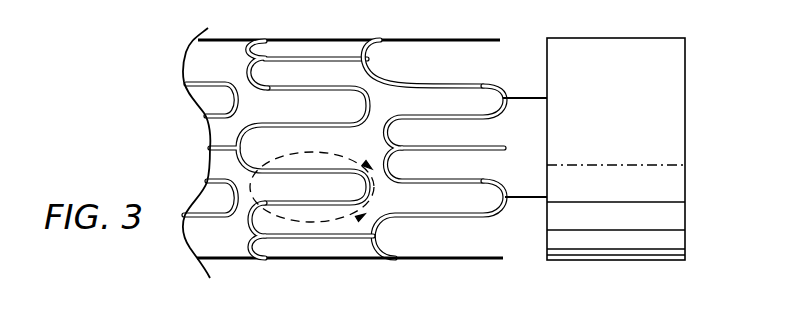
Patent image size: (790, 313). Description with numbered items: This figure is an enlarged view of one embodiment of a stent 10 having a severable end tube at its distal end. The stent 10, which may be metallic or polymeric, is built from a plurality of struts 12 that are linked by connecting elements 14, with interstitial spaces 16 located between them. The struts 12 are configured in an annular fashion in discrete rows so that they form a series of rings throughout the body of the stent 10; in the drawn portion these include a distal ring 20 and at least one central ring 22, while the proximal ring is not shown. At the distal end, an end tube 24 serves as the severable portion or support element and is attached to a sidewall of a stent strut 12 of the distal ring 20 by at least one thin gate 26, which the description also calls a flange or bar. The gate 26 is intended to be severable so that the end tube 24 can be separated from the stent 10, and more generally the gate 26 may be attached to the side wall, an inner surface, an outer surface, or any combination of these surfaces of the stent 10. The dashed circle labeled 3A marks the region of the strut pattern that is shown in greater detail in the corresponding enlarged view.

The stent 10 is at (247, 19).
The struts 12 is at (484, 80).
The connecting elements 14 is at (322, 52).
The interstitial spaces 16 is at (427, 63).
The distal ring 20 is at (462, 259).
The central ring 22 is at (285, 246).
The end tube 24 is at (670, 75).
The gate 26 is at (524, 103).
The detail view indicator 3A is at (327, 187).